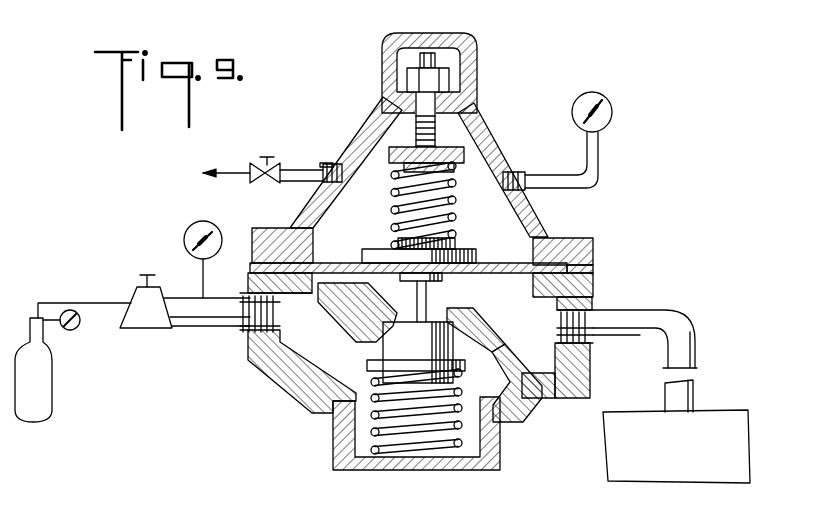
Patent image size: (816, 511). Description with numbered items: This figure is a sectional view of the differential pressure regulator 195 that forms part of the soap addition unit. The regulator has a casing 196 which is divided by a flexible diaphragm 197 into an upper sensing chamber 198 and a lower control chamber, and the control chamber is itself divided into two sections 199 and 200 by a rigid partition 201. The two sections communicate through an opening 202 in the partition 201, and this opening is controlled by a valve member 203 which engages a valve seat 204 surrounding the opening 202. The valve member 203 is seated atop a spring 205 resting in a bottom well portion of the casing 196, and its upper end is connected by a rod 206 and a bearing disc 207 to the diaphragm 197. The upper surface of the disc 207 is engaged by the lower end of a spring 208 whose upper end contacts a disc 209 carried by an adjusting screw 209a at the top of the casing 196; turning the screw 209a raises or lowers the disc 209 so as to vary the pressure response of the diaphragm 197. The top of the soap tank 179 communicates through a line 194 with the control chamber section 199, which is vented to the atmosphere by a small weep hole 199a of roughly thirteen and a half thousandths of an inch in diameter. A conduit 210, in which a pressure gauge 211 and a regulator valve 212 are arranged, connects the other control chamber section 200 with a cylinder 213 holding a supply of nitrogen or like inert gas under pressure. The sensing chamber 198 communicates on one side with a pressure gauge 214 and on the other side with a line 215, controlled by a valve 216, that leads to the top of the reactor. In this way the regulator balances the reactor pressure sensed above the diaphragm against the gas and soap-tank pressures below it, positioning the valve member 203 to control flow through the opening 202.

The tank 179 is at (731, 425).
The line 194 is at (697, 338).
The differential pressure regulator 195 is at (602, 277).
The casing 196 is at (596, 239).
The flexible diaphragm 197 is at (340, 257).
The sensing chamber 198 is at (481, 162).
The control chamber section 199 is at (543, 307).
The weep hole 199a is at (547, 400).
The control chamber section 200 is at (312, 363).
The rigid partition 201 is at (503, 348).
The opening 202 is at (397, 308).
The valve member 203 is at (392, 352).
The valve seat 204 is at (467, 318).
The spring 205 is at (373, 430).
The rod 206 is at (428, 290).
The bearing disc 207 is at (478, 255).
The spring 208 is at (456, 216).
The disc 209 is at (416, 147).
The adjusting screw 209a is at (416, 128).
The conduit 210 is at (202, 327).
The pressure gauge 211 is at (215, 227).
The regulator valve 212 is at (158, 330).
The cylinder 213 is at (51, 407).
The pressure gauge 214 is at (611, 117).
The line 215 is at (231, 171).
The valve 216 is at (277, 164).